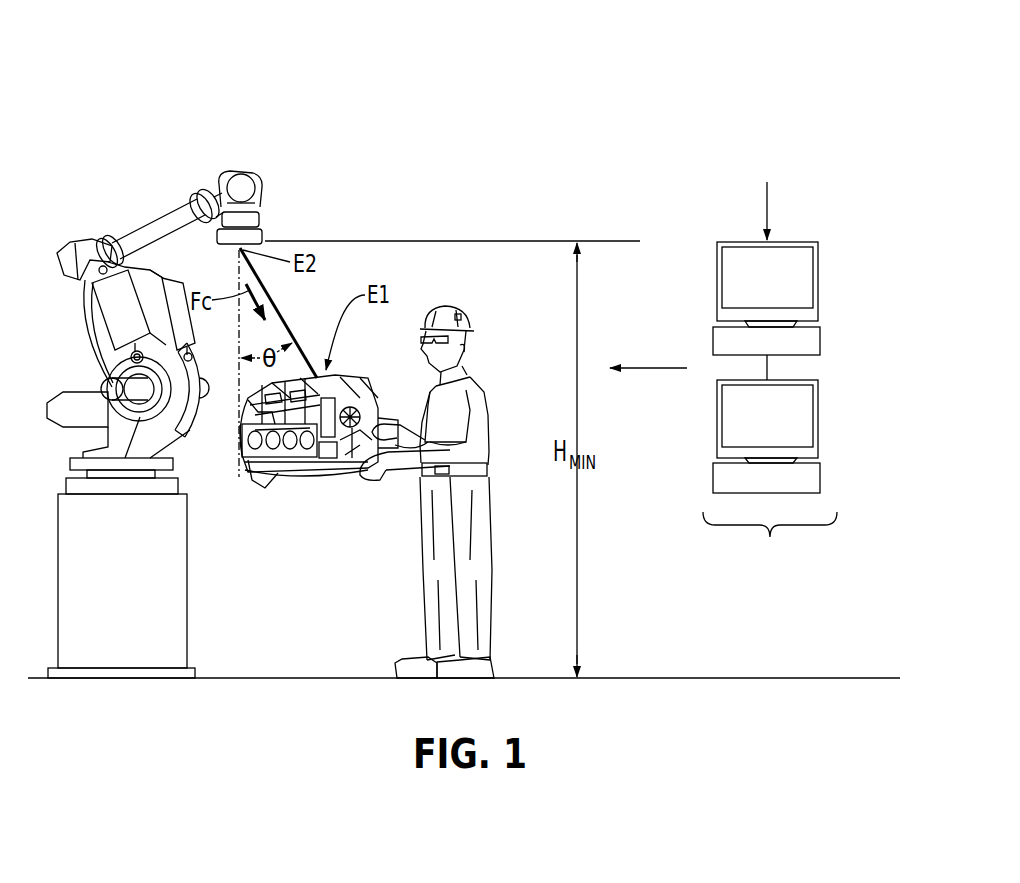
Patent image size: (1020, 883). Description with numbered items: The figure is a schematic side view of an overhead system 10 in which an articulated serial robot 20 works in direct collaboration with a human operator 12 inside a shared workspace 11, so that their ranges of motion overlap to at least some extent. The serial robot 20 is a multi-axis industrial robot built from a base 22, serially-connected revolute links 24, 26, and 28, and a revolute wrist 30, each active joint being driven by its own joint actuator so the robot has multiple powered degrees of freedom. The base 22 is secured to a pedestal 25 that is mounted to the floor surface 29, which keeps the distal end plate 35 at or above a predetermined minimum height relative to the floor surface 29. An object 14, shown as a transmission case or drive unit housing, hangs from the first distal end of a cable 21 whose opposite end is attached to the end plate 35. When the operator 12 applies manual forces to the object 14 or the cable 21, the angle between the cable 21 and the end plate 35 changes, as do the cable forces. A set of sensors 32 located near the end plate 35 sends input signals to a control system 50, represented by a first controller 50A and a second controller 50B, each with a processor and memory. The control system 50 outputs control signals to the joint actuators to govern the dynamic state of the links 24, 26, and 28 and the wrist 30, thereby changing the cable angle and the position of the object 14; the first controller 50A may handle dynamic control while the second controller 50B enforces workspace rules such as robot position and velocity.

The overhead system 10 is at (833, 122).
The shared workspace 11 is at (583, 130).
The human operator 12 is at (487, 385).
The object 14 is at (348, 377).
The articulated serial robot 20 is at (140, 170).
The cable 21 is at (283, 312).
The base 22 is at (163, 487).
The revolute link 24 is at (190, 438).
The pedestal 25 is at (137, 592).
The revolute link 26 is at (158, 315).
The revolute link 28 is at (140, 223).
The floor surface 29 is at (660, 675).
The revolute wrist 30 is at (253, 176).
The sensors 32 is at (262, 216).
The end plate 35 is at (263, 236).
The control system 50 is at (741, 365).
The first controller 50A is at (820, 338).
The second controller 50B is at (820, 481).